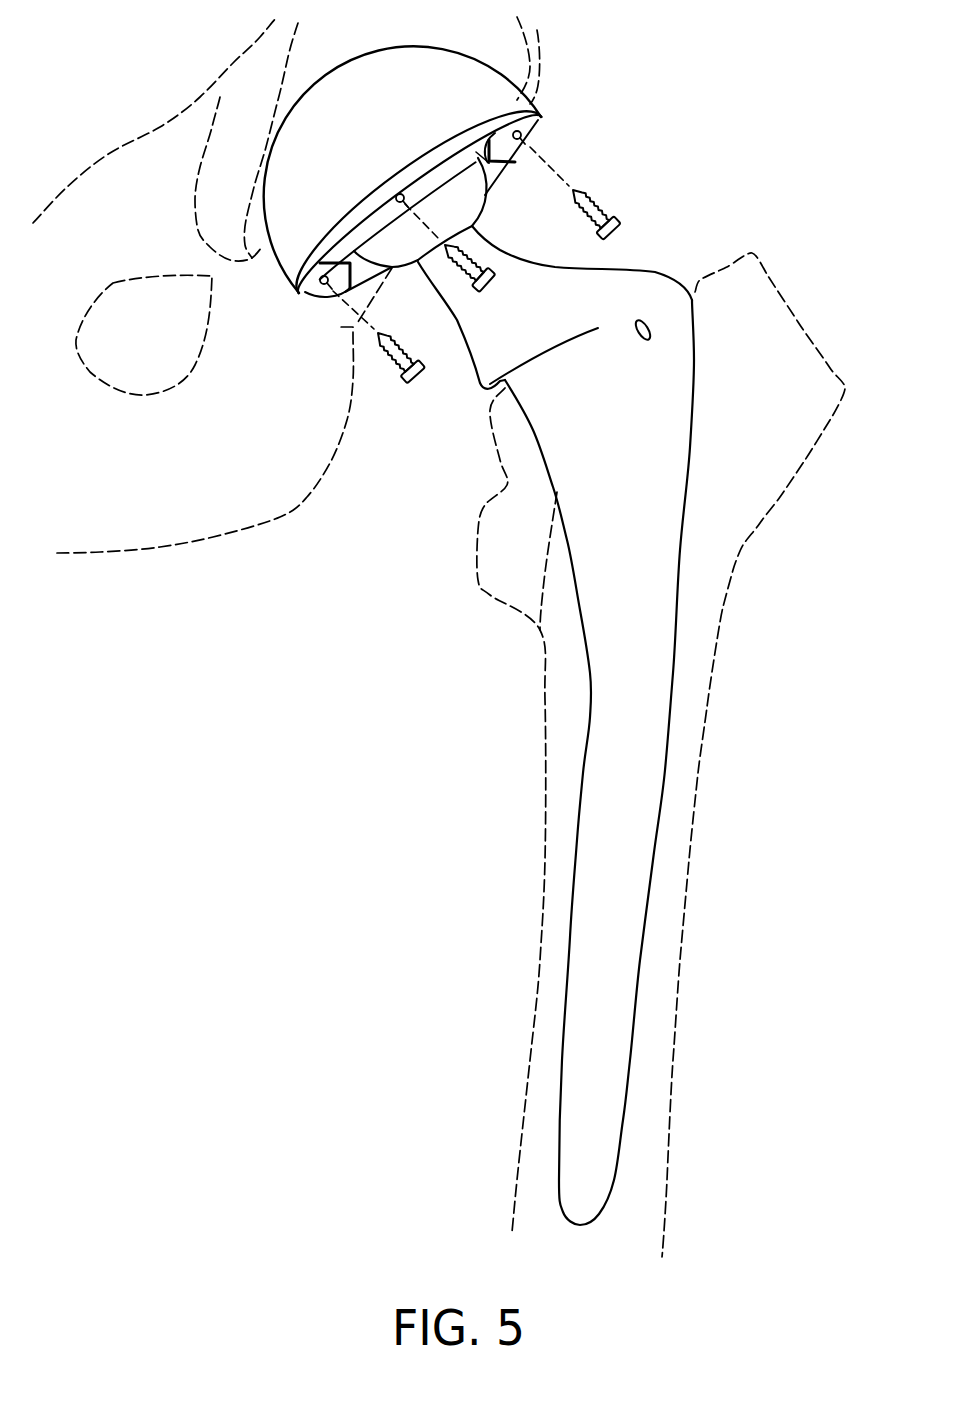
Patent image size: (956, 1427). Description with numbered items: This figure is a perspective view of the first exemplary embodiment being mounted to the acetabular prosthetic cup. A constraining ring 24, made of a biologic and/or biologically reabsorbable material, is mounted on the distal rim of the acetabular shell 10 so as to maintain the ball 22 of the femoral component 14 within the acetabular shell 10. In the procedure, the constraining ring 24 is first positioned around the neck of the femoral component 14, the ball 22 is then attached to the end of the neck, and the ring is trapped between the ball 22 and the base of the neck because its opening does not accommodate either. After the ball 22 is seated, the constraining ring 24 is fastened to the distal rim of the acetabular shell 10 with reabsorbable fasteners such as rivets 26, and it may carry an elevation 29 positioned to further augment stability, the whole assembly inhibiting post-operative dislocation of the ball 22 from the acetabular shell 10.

The acetabular shell 10 is at (442, 60).
The femoral component 14 is at (677, 443).
The ball 22 is at (405, 257).
The constraining ring 24 is at (540, 115).
The rivets 26 is at (393, 372).
The elevation 29 is at (428, 175).